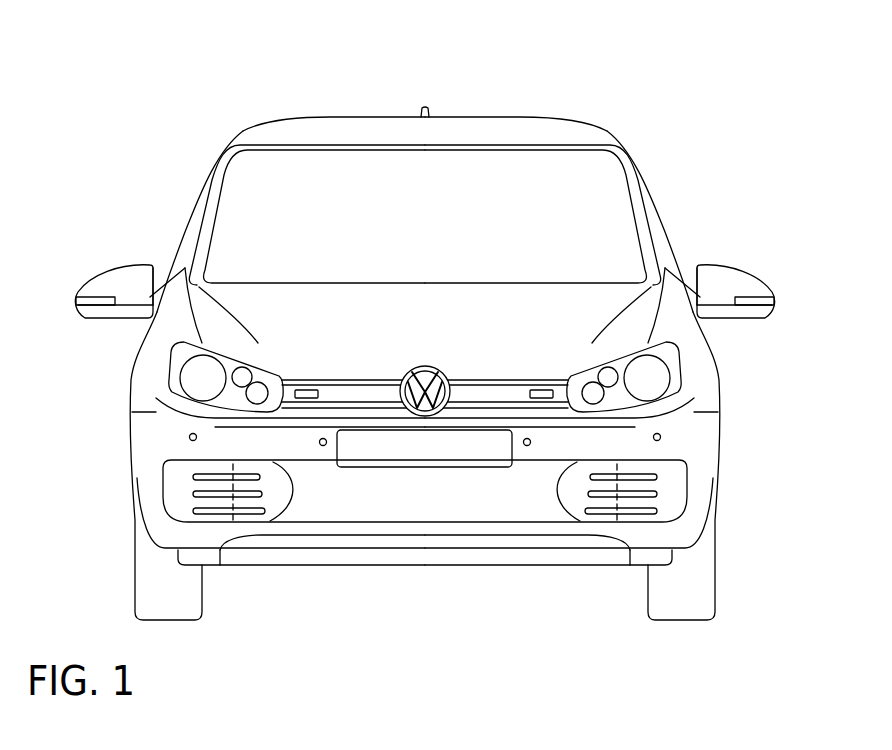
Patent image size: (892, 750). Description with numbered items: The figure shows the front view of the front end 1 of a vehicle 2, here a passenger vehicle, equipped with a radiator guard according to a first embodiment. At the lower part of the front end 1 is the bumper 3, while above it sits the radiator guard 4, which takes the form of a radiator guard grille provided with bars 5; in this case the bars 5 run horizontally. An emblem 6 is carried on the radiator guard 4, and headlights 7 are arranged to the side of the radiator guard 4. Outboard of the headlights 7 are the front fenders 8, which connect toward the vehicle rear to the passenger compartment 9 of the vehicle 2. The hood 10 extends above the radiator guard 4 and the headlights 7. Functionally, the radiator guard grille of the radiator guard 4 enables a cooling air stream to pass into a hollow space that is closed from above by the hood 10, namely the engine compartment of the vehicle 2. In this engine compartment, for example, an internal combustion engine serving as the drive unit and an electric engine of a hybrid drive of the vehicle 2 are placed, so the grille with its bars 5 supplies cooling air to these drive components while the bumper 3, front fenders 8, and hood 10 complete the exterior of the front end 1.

The front end 1 is at (773, 409).
The vehicle 2 is at (181, 129).
The bumper 3 is at (161, 438).
The radiator guard 4 is at (336, 391).
The bars 5 is at (483, 403).
The emblem 6 is at (420, 419).
The headlights 7 is at (173, 377).
The front fenders 8 is at (148, 352).
The passenger compartment 9 is at (590, 128).
The hood 10 is at (576, 308).